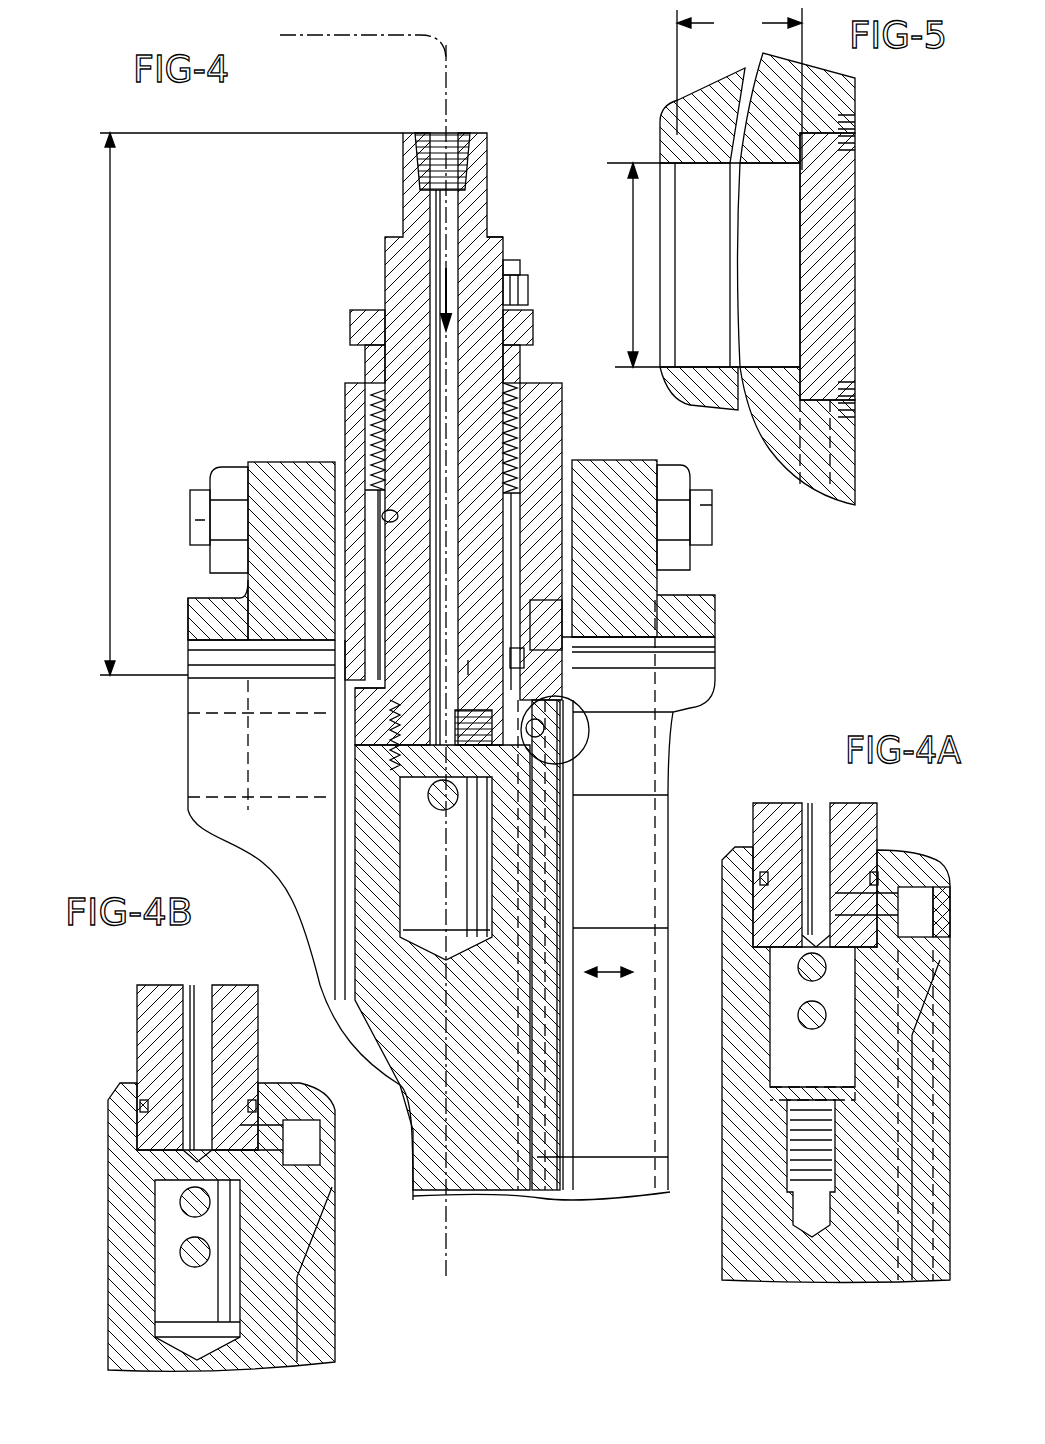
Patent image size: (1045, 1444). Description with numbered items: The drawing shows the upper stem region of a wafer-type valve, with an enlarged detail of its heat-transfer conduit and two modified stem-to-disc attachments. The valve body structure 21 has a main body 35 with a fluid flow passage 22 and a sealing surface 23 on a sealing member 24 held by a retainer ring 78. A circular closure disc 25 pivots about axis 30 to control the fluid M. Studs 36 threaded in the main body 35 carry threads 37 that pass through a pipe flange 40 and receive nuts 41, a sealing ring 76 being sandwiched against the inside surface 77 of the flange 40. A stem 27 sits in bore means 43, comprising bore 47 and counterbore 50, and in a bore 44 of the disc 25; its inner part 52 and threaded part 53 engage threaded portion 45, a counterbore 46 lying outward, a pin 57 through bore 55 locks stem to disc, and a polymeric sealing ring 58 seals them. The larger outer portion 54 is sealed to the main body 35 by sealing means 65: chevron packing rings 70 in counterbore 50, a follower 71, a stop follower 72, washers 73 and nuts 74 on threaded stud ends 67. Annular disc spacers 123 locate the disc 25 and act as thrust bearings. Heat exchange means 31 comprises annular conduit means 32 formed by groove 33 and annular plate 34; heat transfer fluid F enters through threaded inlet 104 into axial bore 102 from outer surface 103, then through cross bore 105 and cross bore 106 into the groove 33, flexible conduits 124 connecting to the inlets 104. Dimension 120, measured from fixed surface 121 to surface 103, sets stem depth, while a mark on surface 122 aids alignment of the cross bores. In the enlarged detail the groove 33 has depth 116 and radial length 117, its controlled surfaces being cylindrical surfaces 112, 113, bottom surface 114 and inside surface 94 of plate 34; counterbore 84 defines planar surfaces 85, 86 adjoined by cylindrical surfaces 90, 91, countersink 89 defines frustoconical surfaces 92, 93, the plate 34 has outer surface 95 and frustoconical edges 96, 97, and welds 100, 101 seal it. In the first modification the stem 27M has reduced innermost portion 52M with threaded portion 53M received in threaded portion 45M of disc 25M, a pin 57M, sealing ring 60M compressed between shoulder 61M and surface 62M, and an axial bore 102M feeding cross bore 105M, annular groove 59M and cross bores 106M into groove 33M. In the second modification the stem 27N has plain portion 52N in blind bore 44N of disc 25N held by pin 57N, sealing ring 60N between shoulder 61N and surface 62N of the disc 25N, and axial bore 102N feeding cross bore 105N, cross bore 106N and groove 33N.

In FIG. 4, the dimension 120 is at (244, 404).
In FIG. 4, the flexible conduits 124 is at (336, 40).
In FIG. 4, the stem 27 is at (388, 248).
In FIG. 4, the threaded inlet 104 is at (422, 132).
In FIG. 4, the outer surface 103 is at (480, 132).
In FIG. 4, the heat transfer fluid F is at (442, 286).
In FIG. 4, the outer portion 54 is at (501, 238).
In FIG. 4, the threaded outer ends 67 is at (512, 260).
In FIG. 4, the washers 73 is at (529, 298).
In FIG. 4, the threaded nuts 74 is at (526, 283).
In FIG. 4, the sealing means 65 is at (532, 366).
In FIG. 4, the surface 122 is at (544, 385).
In FIG. 4, the stop follower 72 is at (352, 318).
In FIG. 4, the follower ring 71 is at (365, 357).
In FIG. 4, the valve body structure 21 is at (345, 386).
In FIG. 4, the chevron packing rings 70 is at (370, 424).
In FIG. 4, the counterbore 50 is at (370, 450).
In FIG. 4, the bore 47 is at (382, 512).
In FIG. 4, the bore means 43 is at (380, 557).
In FIG. 4, the main body 35 is at (562, 396).
In FIG. 4, the axial bore 102 is at (518, 418).
In FIG. 4, the flange 40 is at (268, 460).
In FIG. 4, the threaded nuts 41 is at (226, 472).
In FIG. 4, the studs 36 is at (192, 496).
In FIG. 4, the threads 37 is at (195, 516).
In FIG. 4, the inside surface 77 is at (572, 462).
In FIG. 4, the fixed surface 121 is at (332, 680).
In FIG. 4, the retainer ring 78 is at (548, 614).
In FIG. 4, the sealing ring 76 is at (576, 592).
In FIG. 4, the sealing member 24 is at (530, 655).
In FIG. 4, the annular plate 34 is at (588, 700).
In FIG. 5, the annular plate 34 is at (846, 304).
In FIG. 4, the annular disc spacers 123 is at (470, 658).
In FIG. 4, the sealing surface 23 is at (512, 694).
In FIG. 4, the cross bore 105 is at (432, 684).
In FIG. 4, the counterbore 46 is at (385, 698).
In FIG. 4, the threaded portion 45 is at (388, 712).
In FIG. 4, the fluid flow passage 22 is at (346, 742).
In FIG. 4, the sealing ring 58 is at (388, 758).
In FIG. 4, the threaded part 53 is at (386, 792).
In FIG. 4, the pin 57 is at (396, 812).
In FIG. 4, the bore 55 is at (437, 808).
In FIG. 4, the bore 44 is at (380, 870).
In FIG. 4, the inner part 52 is at (408, 912).
In FIG. 4, the annular conduit means 32 is at (556, 728).
In FIG. 5, the annular conduit means 32 is at (700, 345).
In FIG. 4, the heat exchange means 31 is at (556, 732).
In FIG. 4, the cross bore 106 is at (532, 768).
In FIG. 5, the cross bore 106 is at (665, 162).
In FIG. 4, the closure disc 25 is at (530, 1068).
In FIG. 5, the closure disc 25 is at (856, 458).
In FIG. 4, the fluid M is at (612, 968).
In FIG. 4, the axis 30 is at (448, 1228).
In FIG. 5, the depth 116 is at (739, 89).
In FIG. 5, the annular counterbore 84 is at (820, 100).
In FIG. 5, the annular groove 33 is at (752, 262).
In FIG. 5, the radial length 117 is at (633, 265).
In FIG. 5, the frustoconical surface 92 is at (850, 95).
In FIG. 5, the annular countersink 89 is at (858, 122).
In FIG. 5, the weld 100 is at (858, 136).
In FIG. 5, the frustoconical surface 96 is at (858, 152).
In FIG. 5, the cylindrical surface 90 is at (855, 178).
In FIG. 5, the surface 95 is at (858, 224).
In FIG. 5, the annular planar surface 85 is at (806, 178).
In FIG. 5, the surface 94 is at (800, 224).
In FIG. 5, the cylindrical surface 112 is at (710, 170).
In FIG. 5, the surface 114 is at (685, 238).
In FIG. 5, the cylindrical surface 113 is at (720, 365).
In FIG. 5, the annular planar surface 86 is at (806, 366).
In FIG. 5, the cylindrical surface 91 is at (858, 362).
In FIG. 5, the frustoconical surface 97 is at (858, 386).
In FIG. 5, the weld 101 is at (858, 402).
In FIG. 5, the frustoconical surface 93 is at (858, 418).
In FIG. 4A, the disc 25M is at (740, 1250).
In FIG. 4A, the stem 27M is at (787, 806).
In FIG. 4A, the passage 102M is at (815, 804).
In FIG. 4A, the cross bore 105M is at (845, 840).
In FIG. 4A, the polymeric sealing ring 60M is at (760, 870).
In FIG. 4A, the annular shoulder 61M is at (878, 850).
In FIG. 4A, the cross bores 106M is at (890, 905).
In FIG. 4A, the groove 33M is at (905, 938).
In FIG. 4A, the annular surface 62M is at (760, 886).
In FIG. 4A, the annular groove 59M is at (762, 930).
In FIG. 4A, the pin 57M is at (798, 968).
In FIG. 4A, the innermost portion 52M is at (795, 1130).
In FIG. 4A, the threaded portion 45M is at (838, 1130).
In FIG. 4A, the threaded portion 53M is at (800, 1180).
In FIG. 4B, the disc 25N is at (300, 1340).
In FIG. 4B, the stem 27N is at (236, 988).
In FIG. 4B, the passage 102N is at (200, 986).
In FIG. 4B, the polymeric sealing ring 60N is at (140, 1098).
In FIG. 4B, the annular shoulder 61N is at (255, 1098).
In FIG. 4B, the cross bore 106N is at (270, 1130).
In FIG. 4B, the annular surface 62N is at (140, 1122).
In FIG. 4B, the cross bore 105N is at (215, 1157).
In FIG. 4B, the groove 33N is at (322, 1136).
In FIG. 4B, the pin 57N is at (185, 1203).
In FIG. 4B, the blind bore 44N is at (156, 1242).
In FIG. 4B, the innermost portion 52N is at (170, 1310).